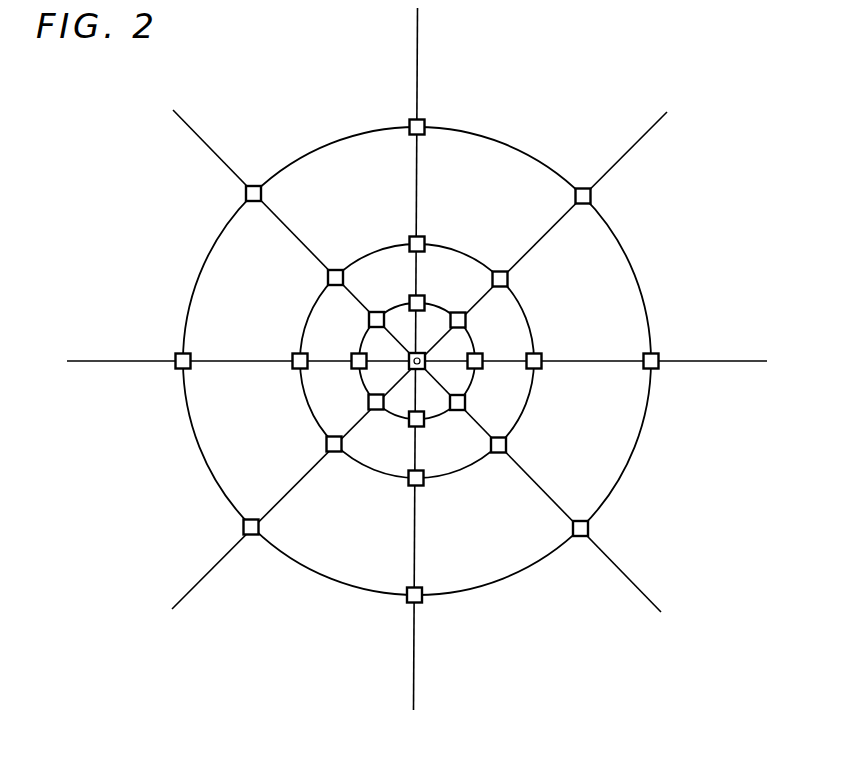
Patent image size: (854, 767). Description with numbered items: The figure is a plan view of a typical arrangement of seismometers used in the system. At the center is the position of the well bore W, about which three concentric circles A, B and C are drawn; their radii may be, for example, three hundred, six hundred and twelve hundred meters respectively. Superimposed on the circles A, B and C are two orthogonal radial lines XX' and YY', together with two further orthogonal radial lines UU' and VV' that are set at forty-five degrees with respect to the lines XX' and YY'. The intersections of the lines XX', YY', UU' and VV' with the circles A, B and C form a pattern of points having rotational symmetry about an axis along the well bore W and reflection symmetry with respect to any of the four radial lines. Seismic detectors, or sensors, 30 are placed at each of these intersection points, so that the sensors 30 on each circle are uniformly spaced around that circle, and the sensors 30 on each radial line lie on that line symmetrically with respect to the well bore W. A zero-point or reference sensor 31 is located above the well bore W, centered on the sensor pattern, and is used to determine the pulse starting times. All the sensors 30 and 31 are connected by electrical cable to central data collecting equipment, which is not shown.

The seismic detectors 30 is at (426, 124).
The zero-point sensor 31 is at (426, 366).
The circle A is at (473, 344).
The circle B is at (528, 322).
The circle C is at (633, 272).
The well bore W is at (421, 353).
The radial line XX' X is at (413, 362).
The radial line YY' Y is at (431, 368).
The radial line UU' U is at (416, 362).
The radial line VV' V is at (431, 365).